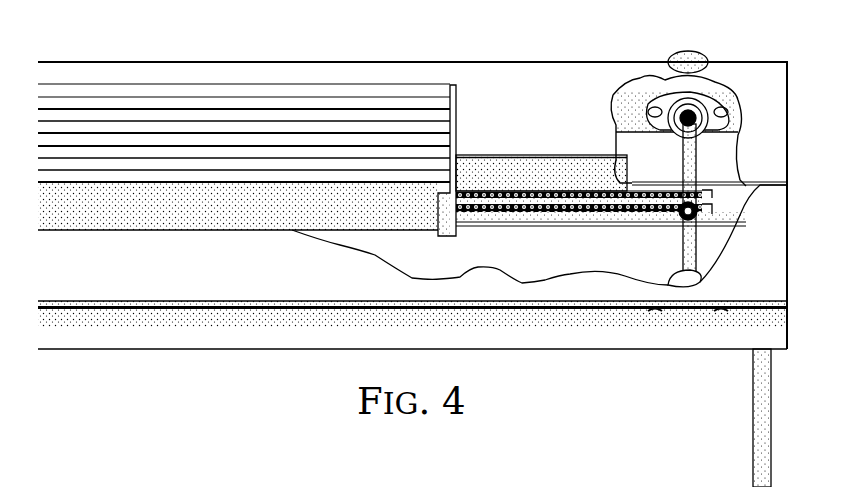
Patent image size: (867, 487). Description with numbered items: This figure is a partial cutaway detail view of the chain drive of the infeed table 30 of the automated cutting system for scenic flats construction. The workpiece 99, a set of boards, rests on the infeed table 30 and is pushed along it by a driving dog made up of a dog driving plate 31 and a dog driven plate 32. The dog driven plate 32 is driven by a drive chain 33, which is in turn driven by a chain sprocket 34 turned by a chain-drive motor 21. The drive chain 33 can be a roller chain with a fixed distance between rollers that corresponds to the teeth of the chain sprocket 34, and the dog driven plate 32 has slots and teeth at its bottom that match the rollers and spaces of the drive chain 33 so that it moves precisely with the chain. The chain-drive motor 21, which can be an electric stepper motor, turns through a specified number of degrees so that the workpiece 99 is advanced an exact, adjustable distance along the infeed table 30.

The chain-drive motor 21 is at (690, 51).
The infeed table 30 is at (138, 360).
The dog driving plate 31 is at (455, 143).
The dog driven plate 32 is at (498, 155).
The drive chain 33 is at (644, 192).
The chain sprocket 34 is at (672, 218).
The workpiece 99 is at (177, 208).